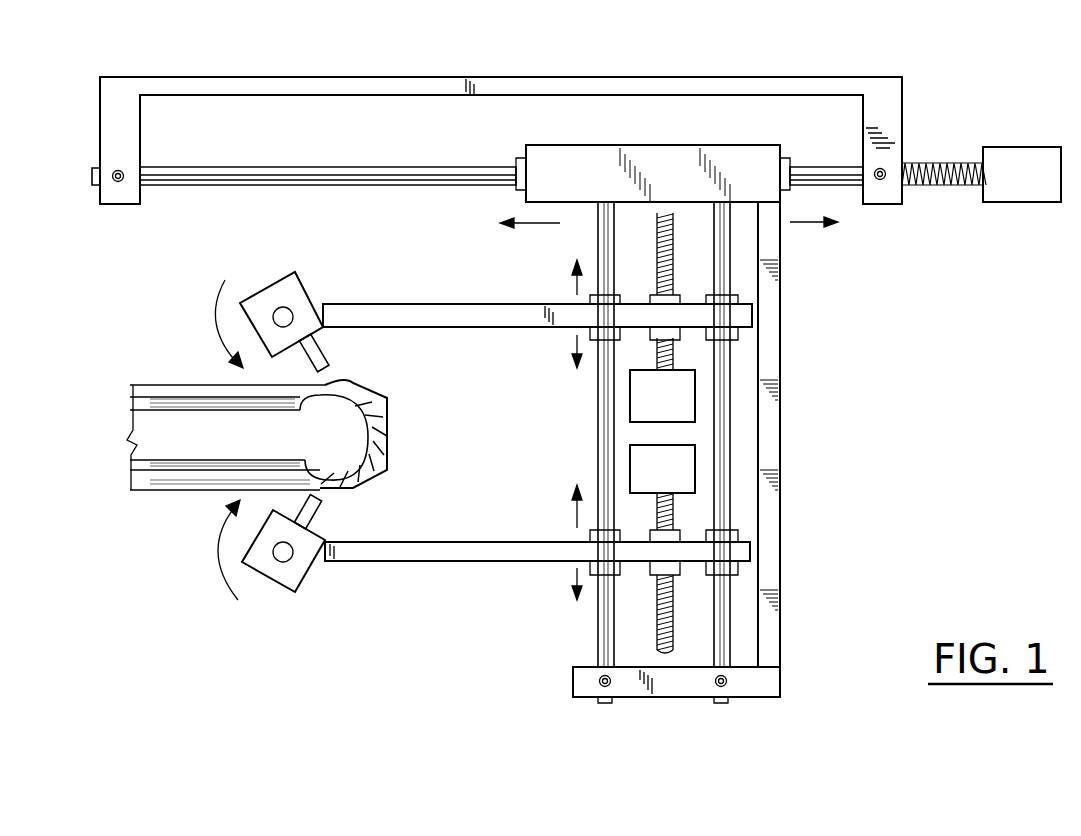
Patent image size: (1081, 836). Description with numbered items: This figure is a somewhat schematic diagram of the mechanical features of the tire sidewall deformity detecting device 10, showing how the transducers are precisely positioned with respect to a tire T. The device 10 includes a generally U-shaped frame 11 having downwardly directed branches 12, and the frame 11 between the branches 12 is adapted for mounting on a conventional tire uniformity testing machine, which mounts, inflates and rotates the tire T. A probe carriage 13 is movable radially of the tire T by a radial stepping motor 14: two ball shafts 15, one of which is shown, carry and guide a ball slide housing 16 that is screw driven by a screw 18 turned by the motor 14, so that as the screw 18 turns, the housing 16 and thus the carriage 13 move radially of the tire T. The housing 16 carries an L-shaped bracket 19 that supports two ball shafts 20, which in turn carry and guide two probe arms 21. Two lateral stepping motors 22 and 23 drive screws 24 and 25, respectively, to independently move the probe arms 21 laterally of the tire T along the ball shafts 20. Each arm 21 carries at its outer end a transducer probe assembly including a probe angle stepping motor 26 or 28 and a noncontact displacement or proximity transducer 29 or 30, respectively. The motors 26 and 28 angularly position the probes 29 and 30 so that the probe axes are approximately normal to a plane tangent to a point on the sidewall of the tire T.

The tire sidewall deformity detecting device 10 is at (868, 312).
The frame 11 is at (717, 65).
The branches 12 is at (137, 128).
The probe carriage 13 is at (795, 507).
The radial stepping motor 14 is at (1027, 193).
The ball shafts 15 is at (466, 165).
The ball slide housing 16 is at (673, 150).
The screw 18 is at (942, 165).
The L-shaped bracket 19 is at (773, 657).
The ball shafts 20 is at (732, 243).
The probe arms 21 is at (493, 322).
The lateral stepping motor 22 is at (673, 482).
The lateral stepping motor 23 is at (673, 408).
The screw 24 is at (668, 632).
The screw 25 is at (660, 262).
The probe angle stepping motor 26 is at (300, 578).
The probe angle stepping motor 28 is at (295, 287).
The transducer 29 is at (313, 510).
The transducer 30 is at (312, 355).
The tire T is at (380, 400).